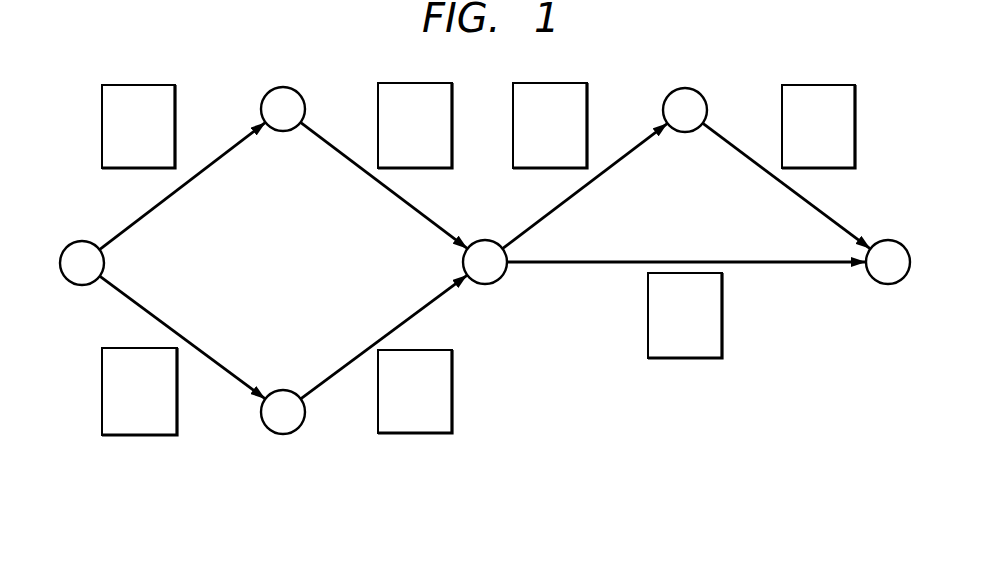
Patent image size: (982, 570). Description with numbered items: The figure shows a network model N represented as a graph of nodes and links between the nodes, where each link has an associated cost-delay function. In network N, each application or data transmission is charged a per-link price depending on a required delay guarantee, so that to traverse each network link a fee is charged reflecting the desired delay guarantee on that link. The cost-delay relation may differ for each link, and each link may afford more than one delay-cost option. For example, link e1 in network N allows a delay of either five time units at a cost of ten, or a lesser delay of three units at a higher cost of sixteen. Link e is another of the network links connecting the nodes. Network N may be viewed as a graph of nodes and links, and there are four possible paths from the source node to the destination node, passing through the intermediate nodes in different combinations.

The network model N is at (820, 349).
The network link e is at (128, 223).
The link e1 is at (194, 348).